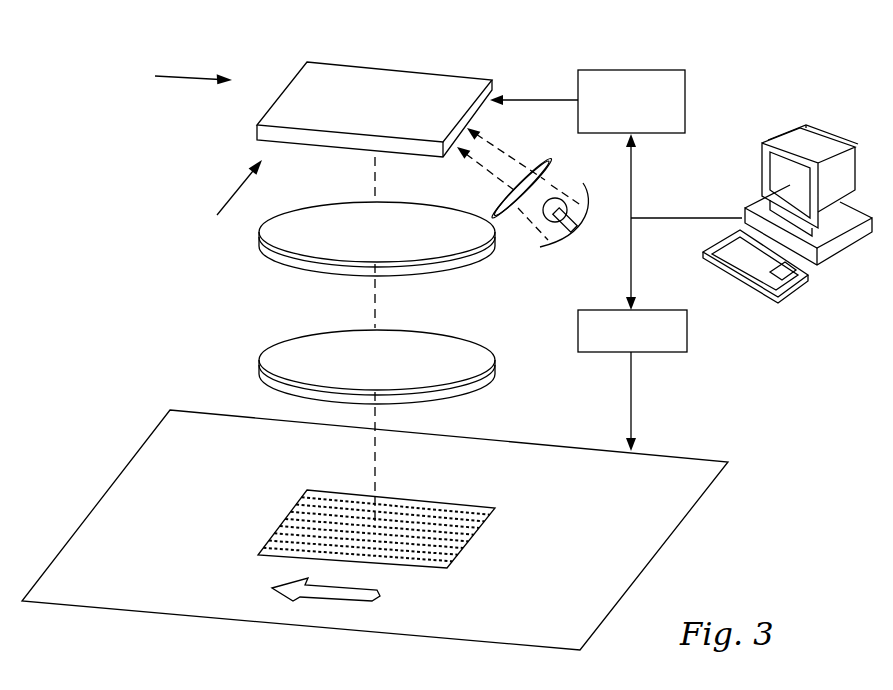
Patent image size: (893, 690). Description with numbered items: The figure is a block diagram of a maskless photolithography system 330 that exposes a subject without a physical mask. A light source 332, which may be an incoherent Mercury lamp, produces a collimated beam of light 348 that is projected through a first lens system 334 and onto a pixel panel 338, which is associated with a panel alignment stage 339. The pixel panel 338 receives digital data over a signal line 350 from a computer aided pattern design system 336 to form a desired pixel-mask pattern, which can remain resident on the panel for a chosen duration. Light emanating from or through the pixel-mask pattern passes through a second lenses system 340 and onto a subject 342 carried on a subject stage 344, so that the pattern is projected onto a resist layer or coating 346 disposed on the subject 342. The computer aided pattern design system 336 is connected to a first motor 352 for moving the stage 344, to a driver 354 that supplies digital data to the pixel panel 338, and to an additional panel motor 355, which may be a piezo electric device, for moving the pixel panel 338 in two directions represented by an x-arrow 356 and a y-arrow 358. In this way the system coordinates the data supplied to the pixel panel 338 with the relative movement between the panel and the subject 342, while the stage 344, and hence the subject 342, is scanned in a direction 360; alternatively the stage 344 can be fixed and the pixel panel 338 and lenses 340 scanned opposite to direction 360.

The maskless photolithography system 330 is at (130, 294).
The light source 332 is at (570, 243).
The first lens system 334 is at (532, 158).
The computer aided pattern design system 336 is at (838, 136).
The pixel panel 338 is at (374, 86).
The panel alignment stage 339 is at (397, 68).
The second lenses system 340 is at (290, 264).
The subject 342 is at (470, 536).
The subject stage 344 is at (655, 553).
The resist layer or coating 346 is at (428, 506).
The collimated beam of light 348 is at (482, 172).
The signal line 350 is at (537, 98).
The first motor 352 is at (688, 336).
The driver 354 is at (660, 161).
The panel motor 355 is at (632, 68).
The x-arrow 356 is at (195, 76).
The y-arrow 358 is at (232, 185).
The scanning direction 360 is at (380, 596).